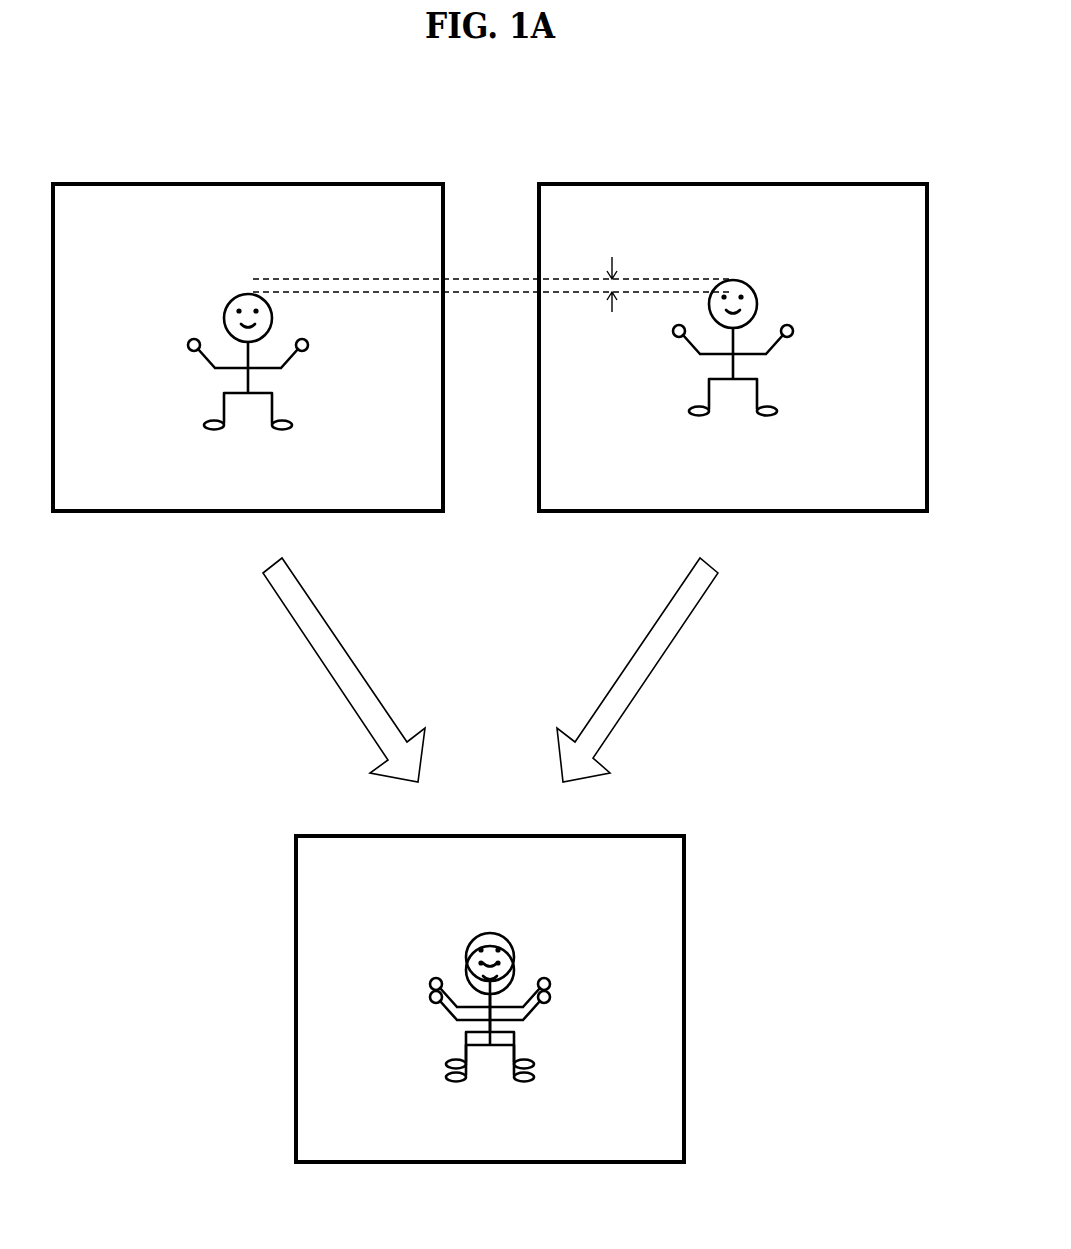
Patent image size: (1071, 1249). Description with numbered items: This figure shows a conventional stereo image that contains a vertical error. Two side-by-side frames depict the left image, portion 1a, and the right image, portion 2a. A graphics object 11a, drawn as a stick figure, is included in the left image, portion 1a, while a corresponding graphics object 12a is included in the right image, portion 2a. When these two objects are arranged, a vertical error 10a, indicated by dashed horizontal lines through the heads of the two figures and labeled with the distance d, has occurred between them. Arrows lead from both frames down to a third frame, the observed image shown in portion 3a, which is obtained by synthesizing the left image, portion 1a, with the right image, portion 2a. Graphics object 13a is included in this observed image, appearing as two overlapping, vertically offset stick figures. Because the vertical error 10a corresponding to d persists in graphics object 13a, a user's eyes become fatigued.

The left image portion 1a is at (245, 184).
The right image portion 2a is at (723, 184).
The observed image portion 3a is at (684, 997).
The vertical error 10a is at (620, 280).
The graphics object 11a is at (230, 300).
The graphics object 12a is at (747, 282).
The graphics object 13a is at (513, 950).